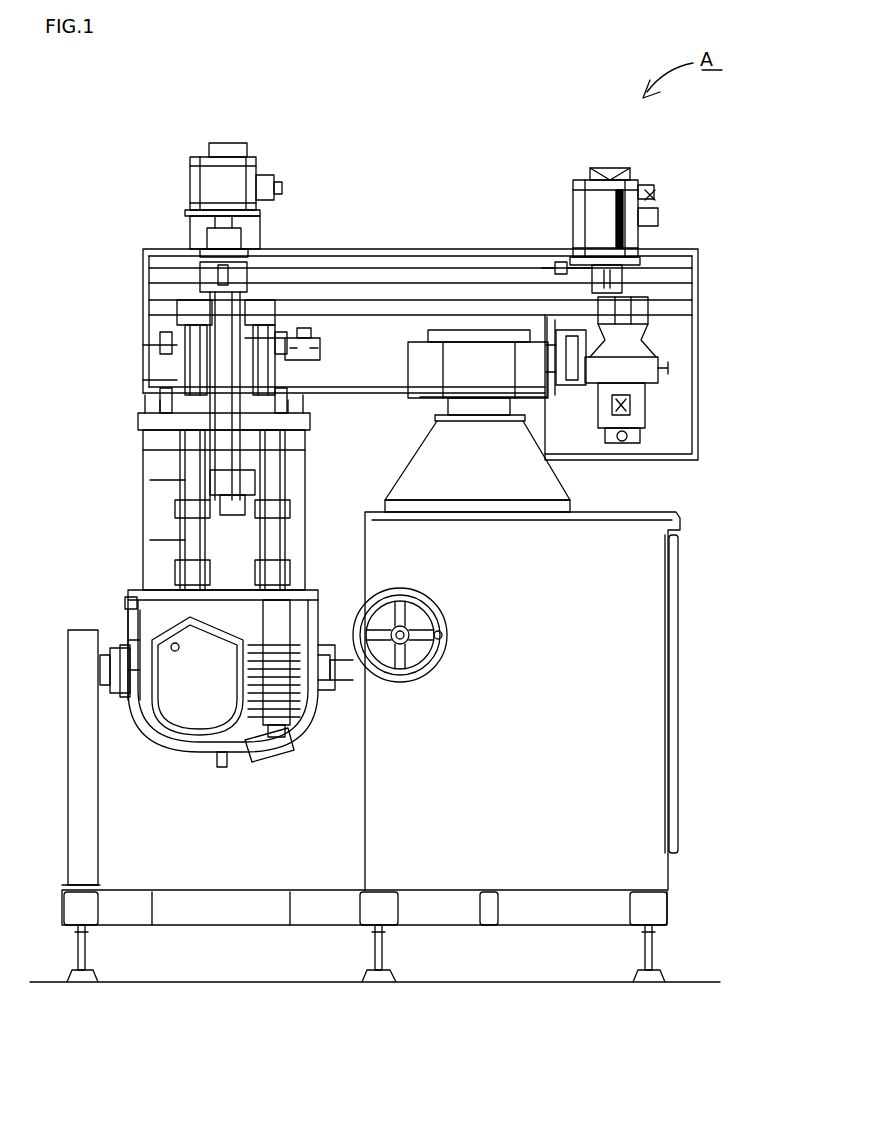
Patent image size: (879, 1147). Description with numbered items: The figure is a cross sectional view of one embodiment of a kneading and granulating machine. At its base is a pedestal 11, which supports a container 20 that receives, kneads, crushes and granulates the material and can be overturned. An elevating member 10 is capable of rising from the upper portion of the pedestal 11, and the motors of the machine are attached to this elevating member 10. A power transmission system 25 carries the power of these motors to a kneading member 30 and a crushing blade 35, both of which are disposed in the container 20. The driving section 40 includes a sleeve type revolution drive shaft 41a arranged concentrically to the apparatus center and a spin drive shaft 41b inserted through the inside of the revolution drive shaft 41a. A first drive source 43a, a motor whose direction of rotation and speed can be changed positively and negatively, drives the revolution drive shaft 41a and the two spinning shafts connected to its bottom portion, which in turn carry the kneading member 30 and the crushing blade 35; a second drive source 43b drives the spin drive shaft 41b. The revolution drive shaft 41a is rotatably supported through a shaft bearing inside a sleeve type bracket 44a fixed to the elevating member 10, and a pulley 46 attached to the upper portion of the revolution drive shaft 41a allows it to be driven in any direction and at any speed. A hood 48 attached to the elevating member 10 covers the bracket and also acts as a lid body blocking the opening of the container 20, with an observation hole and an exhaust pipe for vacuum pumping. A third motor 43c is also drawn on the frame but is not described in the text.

The elevating member 10 is at (440, 400).
The pedestal 11 is at (640, 675).
The container 20 is at (138, 608).
The power transmission system 25 is at (377, 278).
The kneading member 30 is at (130, 700).
The crushing blade 35 is at (296, 725).
The driving section 40 is at (130, 212).
The revolution drive shaft 41a is at (203, 378).
The spin drive shaft 41b is at (210, 348).
The first drive source 43a is at (660, 356).
The second drive source 43b is at (263, 188).
The third motor 43c is at (660, 222).
The sleeve type bracket 44a is at (258, 378).
The pulley 46 is at (218, 330).
The hood 48 is at (138, 520).